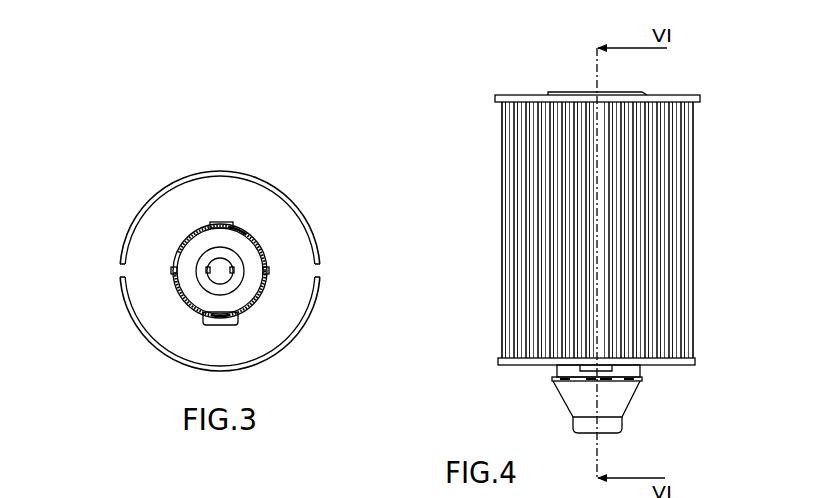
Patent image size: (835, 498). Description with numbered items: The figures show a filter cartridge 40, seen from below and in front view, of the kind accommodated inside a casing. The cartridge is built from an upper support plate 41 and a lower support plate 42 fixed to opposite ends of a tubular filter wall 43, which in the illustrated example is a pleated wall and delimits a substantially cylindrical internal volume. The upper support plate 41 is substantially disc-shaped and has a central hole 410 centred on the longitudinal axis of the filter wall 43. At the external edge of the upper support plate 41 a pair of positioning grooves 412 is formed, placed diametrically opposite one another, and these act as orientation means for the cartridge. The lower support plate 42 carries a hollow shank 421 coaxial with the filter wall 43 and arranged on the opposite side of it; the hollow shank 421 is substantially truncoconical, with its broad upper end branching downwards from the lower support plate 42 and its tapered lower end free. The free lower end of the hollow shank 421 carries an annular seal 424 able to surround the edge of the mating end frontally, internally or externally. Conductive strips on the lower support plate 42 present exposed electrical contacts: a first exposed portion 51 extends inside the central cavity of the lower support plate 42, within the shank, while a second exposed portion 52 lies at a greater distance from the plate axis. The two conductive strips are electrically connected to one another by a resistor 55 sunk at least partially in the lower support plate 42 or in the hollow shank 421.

In FIG. 3, the filter cartridge 40 is at (129, 141).
In FIG. 4, the filter cartridge 40 is at (471, 126).
In FIG. 3, the upper support plate 41 is at (123, 241).
In FIG. 4, the upper support plate 41 is at (518, 96).
In FIG. 4, the central hole 410 is at (603, 92).
In FIG. 3, the positioning grooves 412 is at (120, 267).
In FIG. 3, the lower support plate 42 is at (173, 214).
In FIG. 4, the lower support plate 42 is at (696, 363).
In FIG. 3, the hollow shank 421 is at (243, 247).
In FIG. 4, the hollow shank 421 is at (618, 393).
In FIG. 3, the annular seal 424 is at (243, 260).
In FIG. 4, the annular seal 424 is at (613, 425).
In FIG. 4, the tubular filter wall 43 is at (663, 217).
In FIG. 3, the first exposed portion 51 is at (231, 270).
In FIG. 3, the second exposed portion 52 is at (171, 271).
In FIG. 3, the resistor 55 is at (248, 312).
In FIG. 4, the resistor 55 is at (643, 368).